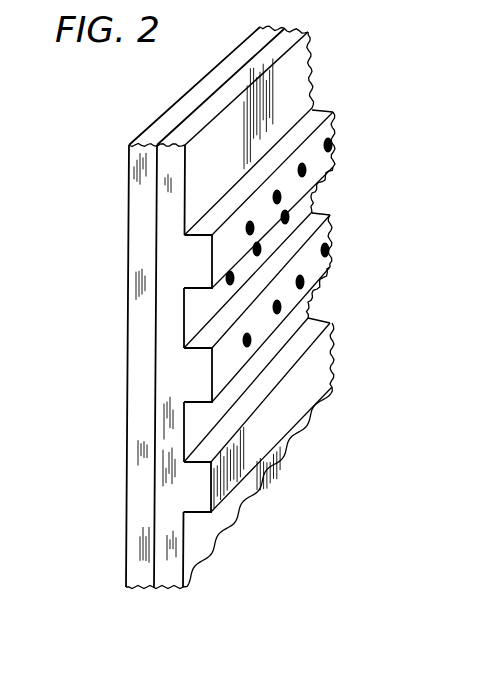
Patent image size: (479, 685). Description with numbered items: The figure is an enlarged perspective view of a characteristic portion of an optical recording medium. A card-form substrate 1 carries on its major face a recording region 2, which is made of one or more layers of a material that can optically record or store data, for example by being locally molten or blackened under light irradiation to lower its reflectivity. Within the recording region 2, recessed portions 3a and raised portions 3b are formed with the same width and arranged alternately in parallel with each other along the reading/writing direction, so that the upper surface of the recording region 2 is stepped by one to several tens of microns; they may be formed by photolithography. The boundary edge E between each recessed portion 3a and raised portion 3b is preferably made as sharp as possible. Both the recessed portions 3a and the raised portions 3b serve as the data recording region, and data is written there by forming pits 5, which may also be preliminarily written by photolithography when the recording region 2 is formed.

The card-form substrate 1 is at (130, 326).
The recording region 2 is at (158, 218).
The recessed portions 3a is at (312, 195).
The raised portions 3b is at (330, 128).
The pits 5 is at (302, 168).
The boundary edge E is at (247, 180).